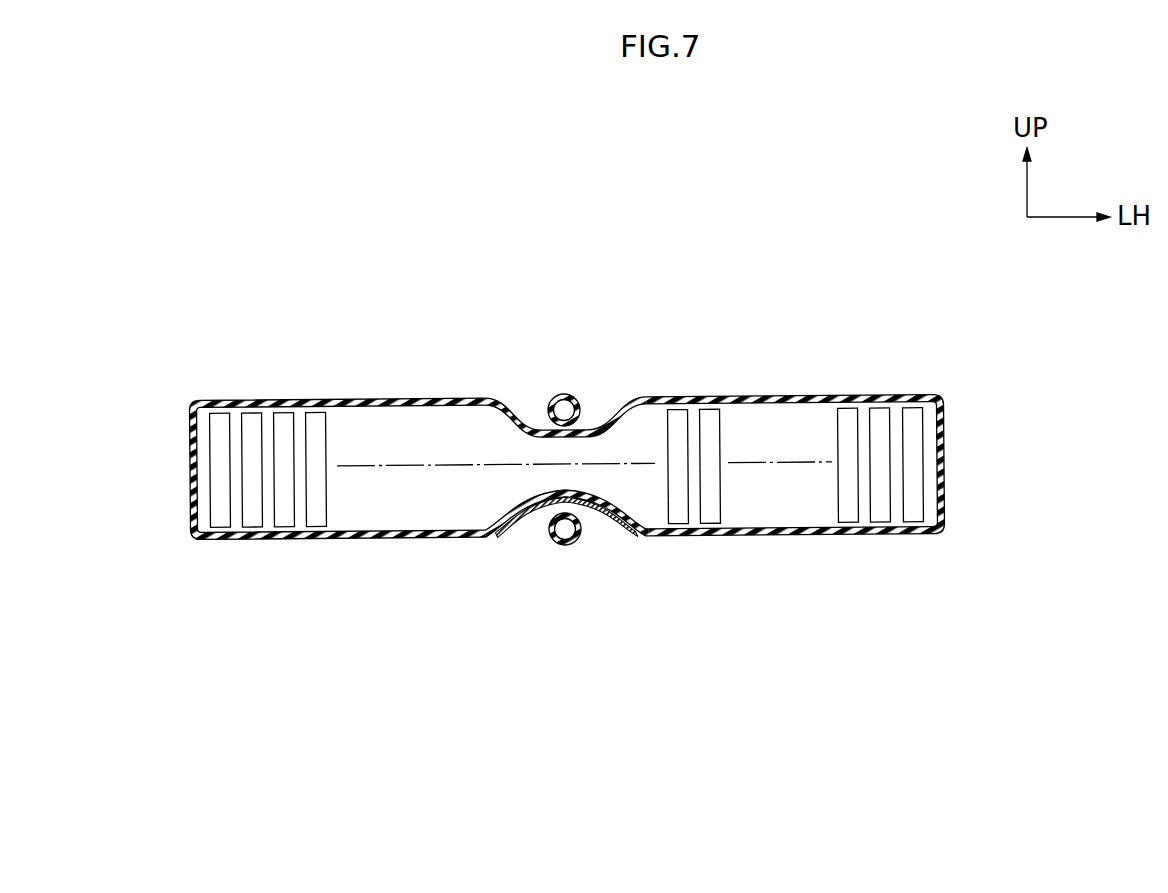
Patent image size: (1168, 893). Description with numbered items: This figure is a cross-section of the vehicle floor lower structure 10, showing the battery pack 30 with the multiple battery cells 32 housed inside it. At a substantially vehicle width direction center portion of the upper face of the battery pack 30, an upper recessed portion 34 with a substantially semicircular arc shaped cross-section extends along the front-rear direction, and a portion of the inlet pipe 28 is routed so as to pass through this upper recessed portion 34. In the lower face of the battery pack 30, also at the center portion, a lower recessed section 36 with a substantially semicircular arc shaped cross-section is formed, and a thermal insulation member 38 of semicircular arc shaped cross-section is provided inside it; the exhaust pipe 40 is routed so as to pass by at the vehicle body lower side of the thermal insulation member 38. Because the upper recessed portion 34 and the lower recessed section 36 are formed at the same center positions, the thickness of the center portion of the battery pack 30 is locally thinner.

The vehicle floor lower structure 10 is at (729, 320).
The inlet pipe 28 is at (563, 393).
The battery pack 30 is at (835, 394).
The battery cells 32 is at (327, 445).
The upper recessed portion 34 is at (617, 408).
The lower recessed section 36 is at (508, 527).
The thermal insulation member 38 is at (622, 527).
The exhaust pipe 40 is at (566, 546).